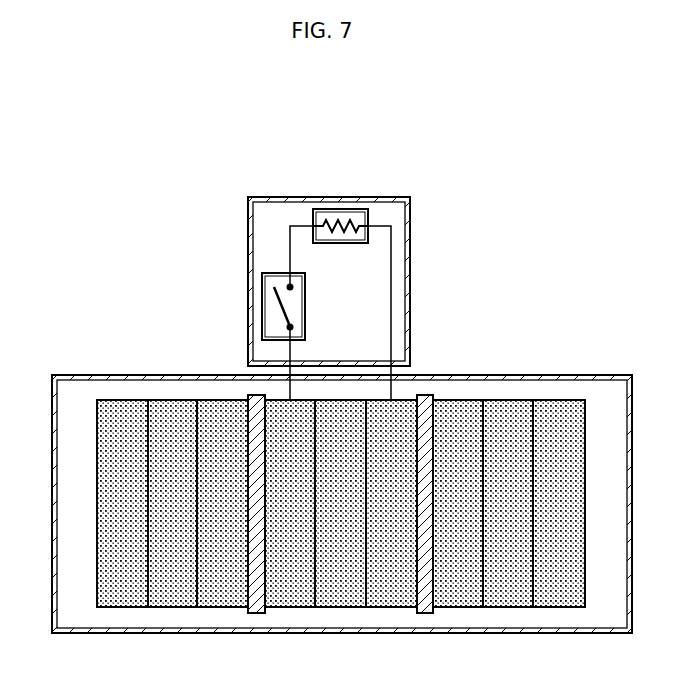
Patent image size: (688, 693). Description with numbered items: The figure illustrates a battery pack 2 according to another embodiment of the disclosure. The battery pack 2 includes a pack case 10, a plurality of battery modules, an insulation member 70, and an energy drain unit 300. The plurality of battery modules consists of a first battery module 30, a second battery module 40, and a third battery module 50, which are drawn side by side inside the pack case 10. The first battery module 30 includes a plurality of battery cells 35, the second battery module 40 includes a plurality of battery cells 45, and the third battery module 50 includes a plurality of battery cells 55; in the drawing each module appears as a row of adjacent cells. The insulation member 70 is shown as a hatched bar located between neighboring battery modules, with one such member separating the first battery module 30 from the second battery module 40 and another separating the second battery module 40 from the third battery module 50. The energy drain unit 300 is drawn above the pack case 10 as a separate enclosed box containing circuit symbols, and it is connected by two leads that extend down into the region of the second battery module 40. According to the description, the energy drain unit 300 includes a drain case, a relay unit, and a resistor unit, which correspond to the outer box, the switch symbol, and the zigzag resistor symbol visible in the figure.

The battery pack 2 is at (166, 146).
The pack case 10 is at (52, 505).
The first battery module 30 is at (173, 610).
The battery cells 35 is at (122, 595).
The second battery module 40 is at (341, 609).
The battery cells 45 is at (390, 595).
The third battery module 50 is at (508, 609).
The battery cells 55 is at (558, 595).
The insulation member 70 is at (257, 614).
The energy drain unit 300 is at (266, 192).